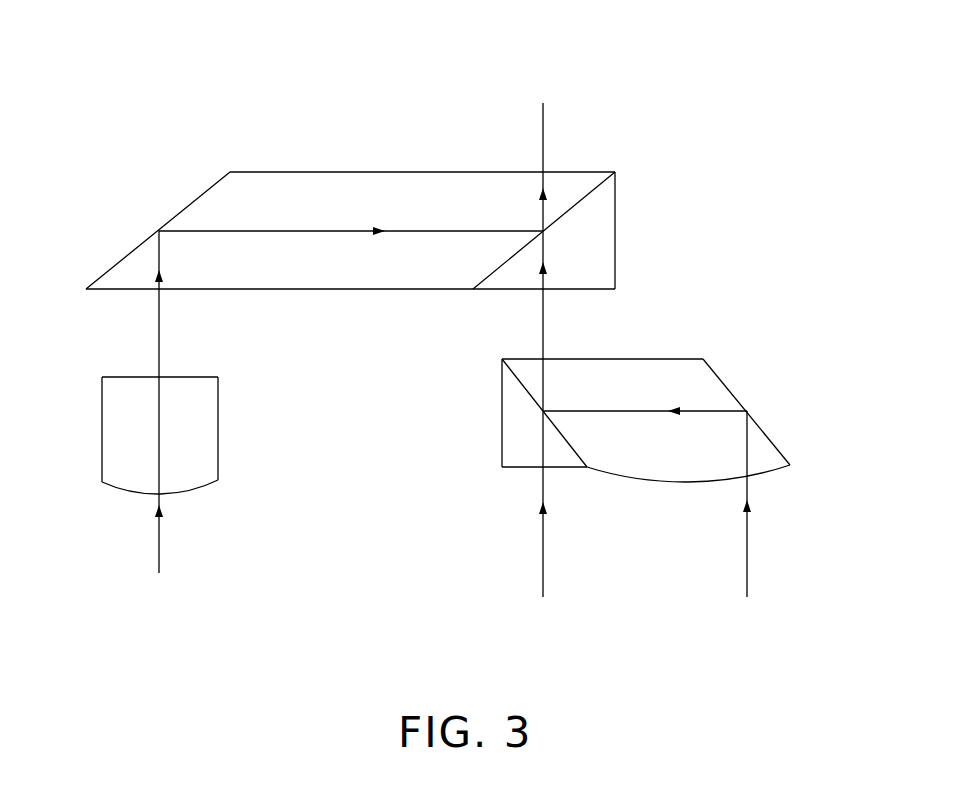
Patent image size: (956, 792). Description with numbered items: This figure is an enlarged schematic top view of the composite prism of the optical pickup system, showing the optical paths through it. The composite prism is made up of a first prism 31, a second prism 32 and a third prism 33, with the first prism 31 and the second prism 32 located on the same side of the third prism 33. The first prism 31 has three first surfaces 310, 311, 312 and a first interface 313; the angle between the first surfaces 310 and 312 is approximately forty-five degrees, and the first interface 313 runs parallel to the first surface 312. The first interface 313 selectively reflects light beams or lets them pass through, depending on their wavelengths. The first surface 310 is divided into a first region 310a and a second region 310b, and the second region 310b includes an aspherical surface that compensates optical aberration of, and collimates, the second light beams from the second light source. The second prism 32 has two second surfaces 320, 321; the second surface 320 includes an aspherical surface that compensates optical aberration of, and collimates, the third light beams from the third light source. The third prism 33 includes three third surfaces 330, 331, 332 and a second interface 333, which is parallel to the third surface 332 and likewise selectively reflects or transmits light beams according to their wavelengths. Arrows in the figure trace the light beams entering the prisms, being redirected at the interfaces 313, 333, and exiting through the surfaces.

The first prism 31 is at (636, 432).
The first surface 310 is at (679, 532).
The first region 310a is at (568, 468).
The second region 310b is at (735, 513).
The first surface 311 is at (647, 357).
The first surface 312 is at (765, 428).
The first interface 313 is at (520, 385).
The second prism 32 is at (114, 475).
The second surface 320 is at (122, 492).
The second surface 321 is at (118, 378).
The third prism 33 is at (353, 209).
The third surface 330 is at (138, 290).
The third surface 331 is at (397, 172).
The third surface 332 is at (188, 203).
The second interface 333 is at (581, 193).